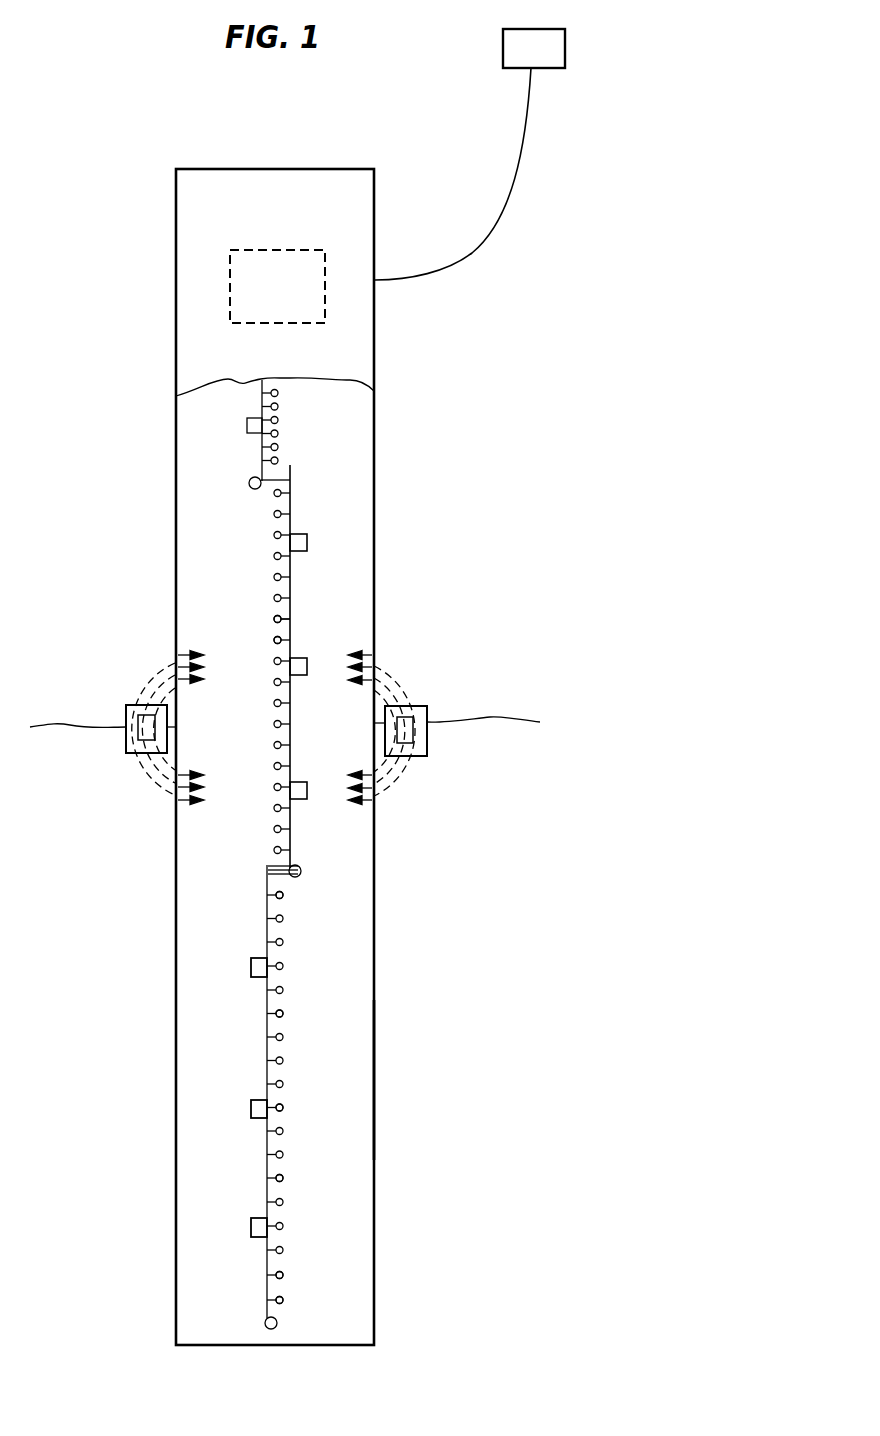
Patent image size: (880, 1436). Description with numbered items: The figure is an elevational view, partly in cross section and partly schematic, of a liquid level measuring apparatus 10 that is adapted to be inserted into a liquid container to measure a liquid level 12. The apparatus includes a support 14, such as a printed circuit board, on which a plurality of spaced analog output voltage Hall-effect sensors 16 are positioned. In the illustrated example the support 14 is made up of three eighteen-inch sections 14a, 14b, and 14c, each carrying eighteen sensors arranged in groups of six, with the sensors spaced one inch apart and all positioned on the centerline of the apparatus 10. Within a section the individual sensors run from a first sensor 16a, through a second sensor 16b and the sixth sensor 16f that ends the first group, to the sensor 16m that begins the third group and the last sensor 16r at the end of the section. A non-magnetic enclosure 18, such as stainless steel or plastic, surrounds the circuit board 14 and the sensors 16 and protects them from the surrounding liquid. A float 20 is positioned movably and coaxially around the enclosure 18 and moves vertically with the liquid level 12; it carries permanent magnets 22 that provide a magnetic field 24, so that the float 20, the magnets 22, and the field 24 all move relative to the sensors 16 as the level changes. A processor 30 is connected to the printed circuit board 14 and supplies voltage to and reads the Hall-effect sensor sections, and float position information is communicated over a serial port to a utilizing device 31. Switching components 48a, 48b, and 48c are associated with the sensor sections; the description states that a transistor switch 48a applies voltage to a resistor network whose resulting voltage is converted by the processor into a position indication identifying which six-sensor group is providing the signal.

The liquid level measuring apparatus 10 is at (404, 507).
The liquid level 12 is at (510, 720).
The support 14 is at (291, 603).
The first sensor section 14a is at (267, 1047).
The second sensor section 14b is at (292, 627).
The third sensor section 14c is at (243, 444).
The analog output voltage Hall-effect sensors 16 is at (266, 641).
The first Hall-effect sensor 16a is at (283, 1300).
The second Hall-effect sensor 16b is at (283, 1275).
The sixth Hall-effect sensor 16f is at (283, 1178).
The thirteenth Hall-effect sensor 16m is at (283, 1013).
The eighteenth Hall-effect sensor 16r is at (283, 895).
The non-magnetic enclosure 18 is at (375, 1082).
The float 20 is at (424, 710).
The magnets 22 is at (137, 722).
The magnetic field 24 is at (158, 668).
The processor 30 is at (230, 286).
The utilizing device 31 is at (503, 50).
The transistor switch 48a is at (251, 1228).
The second hall-effect sensor 48b is at (251, 1108).
The third hall-effect sensor 48c is at (251, 965).